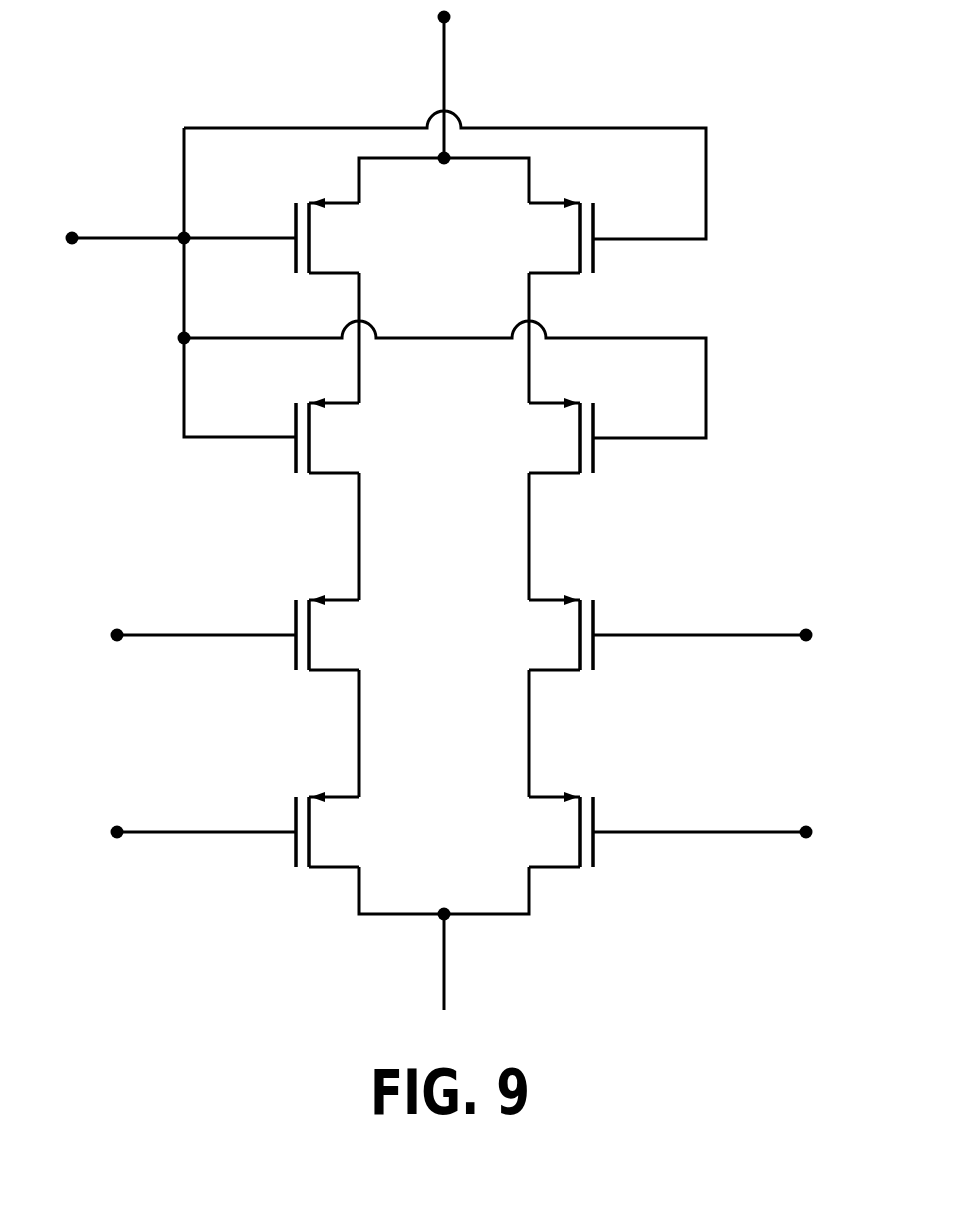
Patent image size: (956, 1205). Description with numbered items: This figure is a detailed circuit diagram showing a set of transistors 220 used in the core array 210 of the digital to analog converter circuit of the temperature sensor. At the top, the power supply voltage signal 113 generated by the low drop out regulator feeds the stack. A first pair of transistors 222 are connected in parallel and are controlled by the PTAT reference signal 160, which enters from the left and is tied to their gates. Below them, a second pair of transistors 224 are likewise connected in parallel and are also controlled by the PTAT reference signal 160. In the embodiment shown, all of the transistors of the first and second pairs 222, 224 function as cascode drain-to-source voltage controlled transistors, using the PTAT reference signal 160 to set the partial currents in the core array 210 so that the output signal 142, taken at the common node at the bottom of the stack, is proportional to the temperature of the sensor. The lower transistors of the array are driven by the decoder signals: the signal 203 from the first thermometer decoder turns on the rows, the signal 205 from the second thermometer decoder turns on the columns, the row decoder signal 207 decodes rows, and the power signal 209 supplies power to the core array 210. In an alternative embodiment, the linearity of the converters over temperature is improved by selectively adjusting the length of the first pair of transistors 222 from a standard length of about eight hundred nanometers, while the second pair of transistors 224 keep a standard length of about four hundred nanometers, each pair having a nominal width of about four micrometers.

The power supply voltage signal 113 is at (445, 73).
The PTAT reference signal 160 is at (137, 233).
The set of transistors 220 is at (690, 292).
The first pair of transistors 222 is at (515, 229).
The second pair of transistors 224 is at (515, 444).
The signal 205 is at (188, 635).
The signal 203 is at (733, 635).
The row decoder signal 207 is at (188, 832).
The power signal 209 is at (733, 832).
The output signal 142 is at (444, 975).
The core array 210 is at (212, 925).